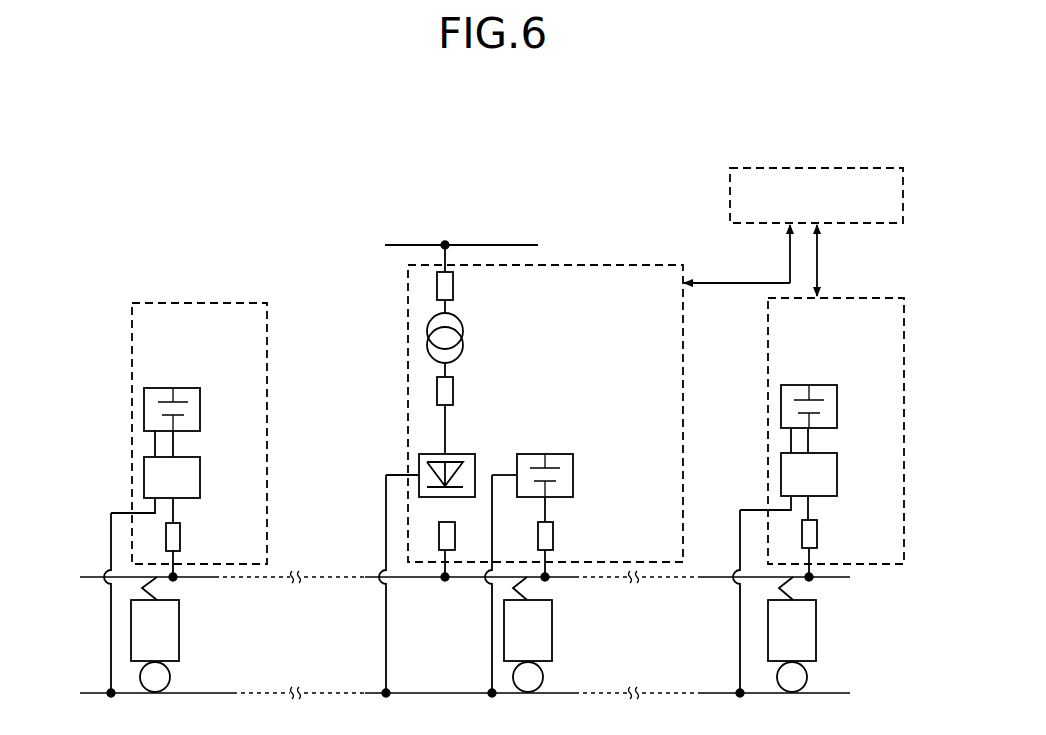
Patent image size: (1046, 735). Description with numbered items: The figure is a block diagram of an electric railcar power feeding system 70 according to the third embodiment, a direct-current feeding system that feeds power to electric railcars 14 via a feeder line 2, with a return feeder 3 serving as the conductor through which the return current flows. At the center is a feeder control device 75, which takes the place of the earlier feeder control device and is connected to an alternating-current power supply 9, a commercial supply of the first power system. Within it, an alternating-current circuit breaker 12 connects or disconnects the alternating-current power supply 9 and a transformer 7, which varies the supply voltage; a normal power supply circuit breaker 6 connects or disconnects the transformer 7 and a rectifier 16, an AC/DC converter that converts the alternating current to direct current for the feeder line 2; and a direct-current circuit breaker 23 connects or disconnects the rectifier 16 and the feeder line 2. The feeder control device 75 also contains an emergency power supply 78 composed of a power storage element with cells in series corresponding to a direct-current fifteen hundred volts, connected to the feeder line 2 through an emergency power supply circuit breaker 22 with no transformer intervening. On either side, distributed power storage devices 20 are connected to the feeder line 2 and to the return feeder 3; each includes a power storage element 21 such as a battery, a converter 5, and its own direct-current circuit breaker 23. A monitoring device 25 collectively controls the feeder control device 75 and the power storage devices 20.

The electric railcar power feeding system 70 is at (316, 219).
The feeder line 2 is at (412, 579).
The return feeder 3 is at (548, 695).
The converter 5 is at (201, 476).
The normal power supply circuit breaker 6 is at (437, 392).
The transformer 7 is at (427, 331).
The alternating-current power supply 9 is at (485, 245).
The alternating-current circuit breaker 12 is at (437, 286).
The electric railcar 14 is at (180, 631).
The rectifier 16 is at (462, 454).
The power storage device 20 is at (178, 300).
The power storage element 21 is at (201, 406).
The emergency power supply circuit breaker 22 is at (554, 536).
The direct-current circuit breaker 23 is at (181, 537).
The monitoring device 25 is at (728, 192).
The feeder control device 75 is at (605, 263).
The emergency power supply 78 is at (537, 454).